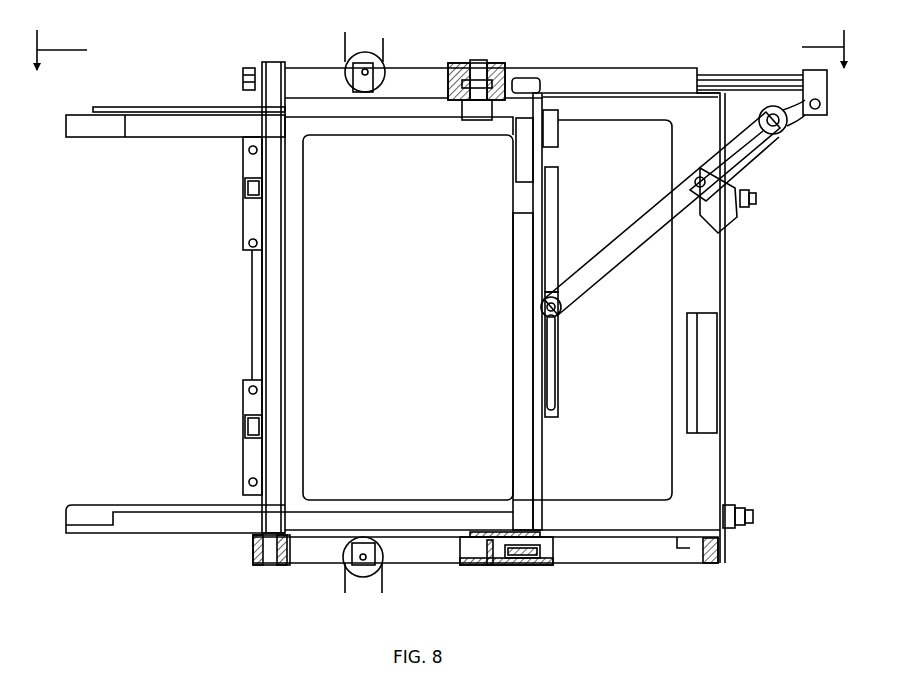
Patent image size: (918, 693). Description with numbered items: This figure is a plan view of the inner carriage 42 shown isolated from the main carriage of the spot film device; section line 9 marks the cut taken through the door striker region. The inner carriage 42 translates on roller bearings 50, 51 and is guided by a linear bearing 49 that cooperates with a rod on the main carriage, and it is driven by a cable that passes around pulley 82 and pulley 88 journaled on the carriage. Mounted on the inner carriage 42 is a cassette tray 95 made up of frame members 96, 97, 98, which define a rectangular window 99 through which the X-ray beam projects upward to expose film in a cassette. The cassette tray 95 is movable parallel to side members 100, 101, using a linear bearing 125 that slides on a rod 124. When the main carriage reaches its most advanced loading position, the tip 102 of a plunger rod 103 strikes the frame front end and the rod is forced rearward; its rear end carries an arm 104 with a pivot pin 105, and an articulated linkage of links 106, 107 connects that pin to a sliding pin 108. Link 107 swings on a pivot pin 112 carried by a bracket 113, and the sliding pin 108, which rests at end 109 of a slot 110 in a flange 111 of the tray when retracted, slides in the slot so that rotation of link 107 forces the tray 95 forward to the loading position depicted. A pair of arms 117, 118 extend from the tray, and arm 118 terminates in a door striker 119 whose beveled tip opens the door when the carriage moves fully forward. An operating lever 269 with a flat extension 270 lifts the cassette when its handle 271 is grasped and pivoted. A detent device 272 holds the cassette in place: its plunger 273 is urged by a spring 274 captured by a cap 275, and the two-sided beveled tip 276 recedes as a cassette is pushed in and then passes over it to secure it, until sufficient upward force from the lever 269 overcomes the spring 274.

The section line 9- 9 is at (439, 39).
The inner carriage 42 is at (734, 304).
The linear bearing 49 is at (253, 560).
The roller bearing 50 is at (752, 205).
The roller bearing 51 is at (738, 528).
The pulley 82 is at (350, 60).
The pulley 88 is at (350, 565).
The cassette tray 95 is at (235, 352).
The frame member 96 is at (295, 348).
The frame member 97 is at (374, 125).
The frame member 98 is at (527, 358).
The rectangular window 99 is at (429, 443).
The side member 100 is at (630, 95).
The side member 101 is at (628, 518).
The tip 102 is at (248, 70).
The plunger rod 103 is at (743, 80).
The arm 104 is at (828, 86).
The pivot pin 105 is at (820, 115).
The link 106 is at (785, 135).
The link 107 is at (618, 257).
The sliding pin 108 is at (560, 317).
The end of slot 109 is at (550, 403).
The slot 110 is at (562, 372).
The flange 111 is at (553, 240).
The pivot pin 112 is at (695, 182).
The bracket 113 is at (708, 225).
The arm 117 is at (180, 512).
The arm 118 is at (182, 120).
The door striker 119 is at (93, 128).
The rod 124 is at (507, 540).
The linear bearing 125 is at (542, 565).
The operating lever 269 is at (537, 225).
The flat extension 270 is at (518, 167).
The handle 271 is at (530, 80).
The detent device 272 is at (505, 55).
The plunger 273 is at (480, 60).
The spring 274 is at (462, 65).
The cap 275 is at (448, 85).
The tip 276 is at (478, 112).